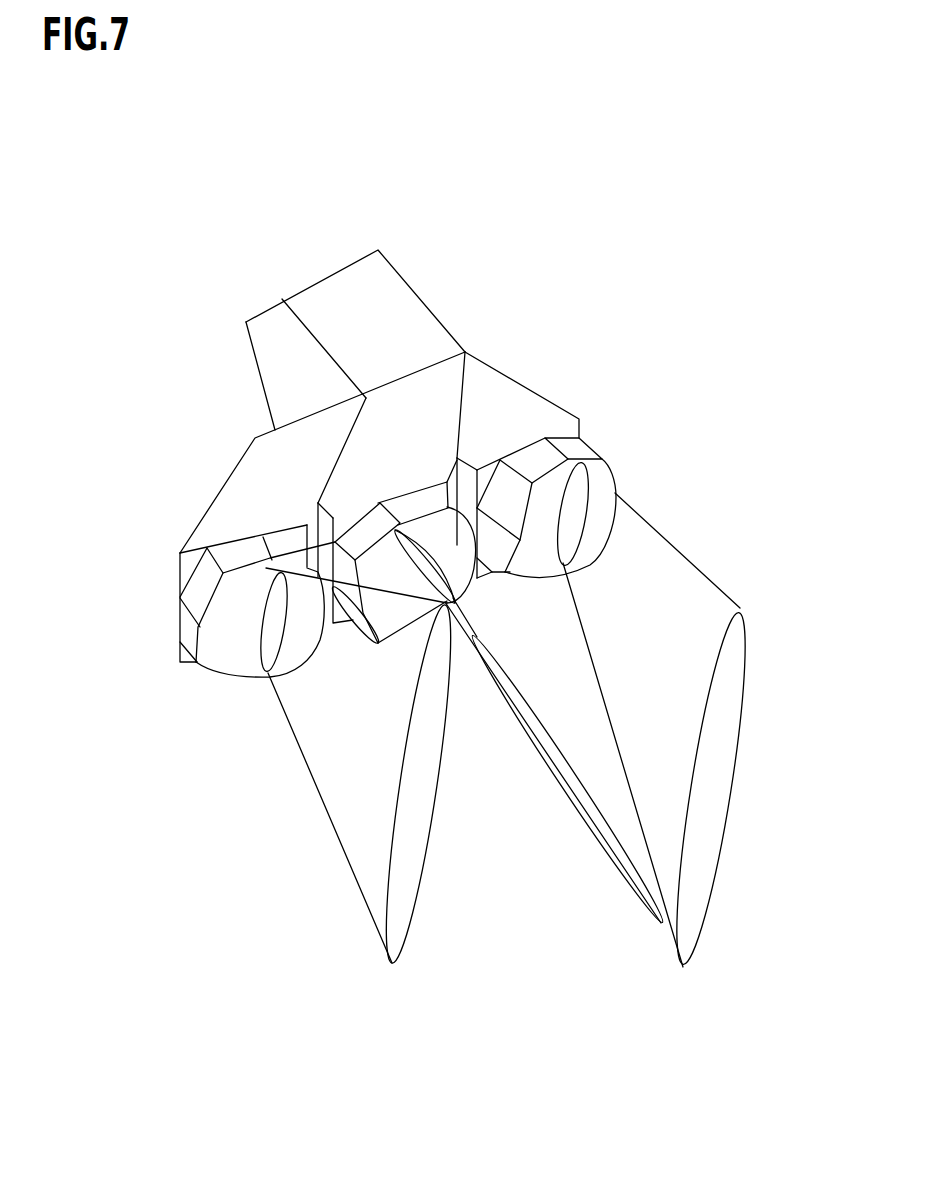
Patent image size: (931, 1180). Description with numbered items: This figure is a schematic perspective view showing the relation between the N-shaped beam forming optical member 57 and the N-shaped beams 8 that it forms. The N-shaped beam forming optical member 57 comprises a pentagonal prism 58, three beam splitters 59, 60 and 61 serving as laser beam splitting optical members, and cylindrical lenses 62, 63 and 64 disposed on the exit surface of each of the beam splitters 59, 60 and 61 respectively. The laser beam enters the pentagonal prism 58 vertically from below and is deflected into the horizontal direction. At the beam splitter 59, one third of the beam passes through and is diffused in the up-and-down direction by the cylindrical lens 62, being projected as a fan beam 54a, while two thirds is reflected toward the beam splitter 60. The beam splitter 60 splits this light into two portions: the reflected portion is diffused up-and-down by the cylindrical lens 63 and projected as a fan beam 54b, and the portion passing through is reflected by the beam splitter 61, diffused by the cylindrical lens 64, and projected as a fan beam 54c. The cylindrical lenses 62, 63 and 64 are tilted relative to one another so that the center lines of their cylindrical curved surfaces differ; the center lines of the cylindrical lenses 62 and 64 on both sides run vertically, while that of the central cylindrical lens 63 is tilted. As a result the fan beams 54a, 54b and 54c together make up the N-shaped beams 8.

The N-shaped beams 8 is at (690, 522).
The N-shaped beam forming optical member 57 is at (507, 307).
The pentagonal prism 58 is at (403, 275).
The beam splitter 59 is at (513, 377).
The beam splitter 60 is at (383, 428).
The beam splitter 61 is at (215, 490).
The cylindrical lens 62 is at (592, 447).
The cylindrical lens 63 is at (417, 505).
The cylindrical lens 64 is at (223, 673).
The fan beam 54a is at (712, 680).
The fan beam 54b is at (588, 835).
The fan beam 54c is at (428, 842).